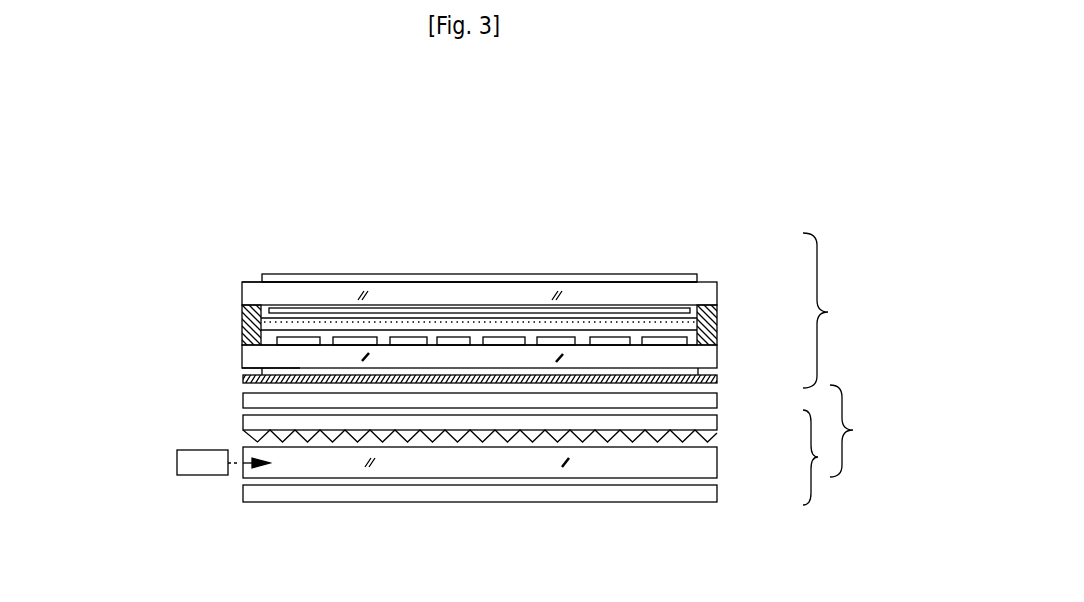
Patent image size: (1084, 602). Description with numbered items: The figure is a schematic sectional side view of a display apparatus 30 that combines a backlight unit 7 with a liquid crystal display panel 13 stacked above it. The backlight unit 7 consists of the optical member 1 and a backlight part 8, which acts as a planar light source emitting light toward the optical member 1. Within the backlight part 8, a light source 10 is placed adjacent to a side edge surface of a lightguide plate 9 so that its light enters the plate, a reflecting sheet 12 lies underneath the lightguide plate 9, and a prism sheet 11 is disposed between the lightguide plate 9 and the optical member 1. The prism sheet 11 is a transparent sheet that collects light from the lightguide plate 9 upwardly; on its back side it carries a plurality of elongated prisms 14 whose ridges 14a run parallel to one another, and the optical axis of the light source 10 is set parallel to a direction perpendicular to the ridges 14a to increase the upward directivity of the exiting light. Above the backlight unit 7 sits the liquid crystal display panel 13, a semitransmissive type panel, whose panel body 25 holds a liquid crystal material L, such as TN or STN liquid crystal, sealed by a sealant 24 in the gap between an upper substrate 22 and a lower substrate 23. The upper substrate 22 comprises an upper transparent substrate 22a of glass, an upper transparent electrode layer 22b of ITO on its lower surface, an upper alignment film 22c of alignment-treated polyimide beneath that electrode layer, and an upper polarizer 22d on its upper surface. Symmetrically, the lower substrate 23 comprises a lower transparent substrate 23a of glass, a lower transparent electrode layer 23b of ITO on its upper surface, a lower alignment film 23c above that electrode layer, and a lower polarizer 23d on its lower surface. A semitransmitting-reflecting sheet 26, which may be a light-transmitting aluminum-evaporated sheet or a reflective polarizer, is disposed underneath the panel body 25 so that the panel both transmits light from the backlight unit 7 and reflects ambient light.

The display apparatus 30 is at (703, 183).
The liquid crystal display panel 13 is at (830, 310).
The panel body 25 is at (247, 276).
The upper substrate 22 is at (728, 282).
The upper transparent substrate 22a is at (315, 283).
The upper transparent electrode layer 22b is at (374, 308).
The upper alignment film 22c is at (410, 318).
The upper polarizer 22d is at (493, 274).
The liquid crystal material L is at (448, 330).
The lower substrate 23 is at (730, 358).
The lower transparent substrate 23a is at (605, 330).
The lower transparent electrode layer 23b is at (558, 340).
The lower alignment film 23c is at (522, 336).
The lower polarizer 23d is at (270, 360).
The sealant 24 is at (242, 320).
The semitransmitting-reflecting sheet 26 is at (717, 379).
The backlight unit 7 is at (850, 431).
The backlight part 8 is at (820, 457).
The optical member 1 is at (717, 398).
The prism sheet 11 is at (717, 417).
The prisms 14 is at (242, 440).
The ridges 14a is at (243, 468).
The lightguide plate 9 is at (717, 457).
The reflecting sheet 12 is at (717, 492).
The light source 10 is at (177, 453).